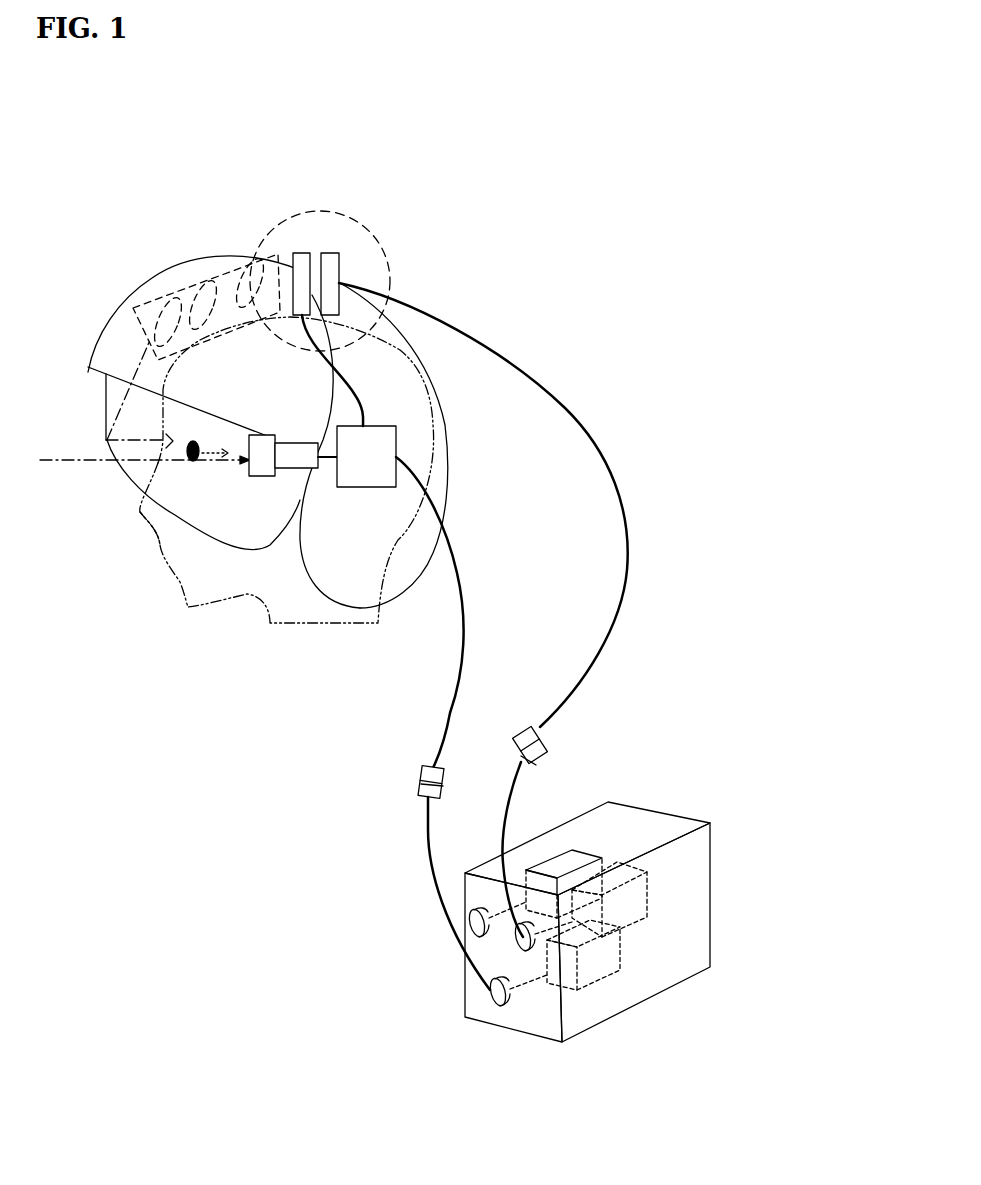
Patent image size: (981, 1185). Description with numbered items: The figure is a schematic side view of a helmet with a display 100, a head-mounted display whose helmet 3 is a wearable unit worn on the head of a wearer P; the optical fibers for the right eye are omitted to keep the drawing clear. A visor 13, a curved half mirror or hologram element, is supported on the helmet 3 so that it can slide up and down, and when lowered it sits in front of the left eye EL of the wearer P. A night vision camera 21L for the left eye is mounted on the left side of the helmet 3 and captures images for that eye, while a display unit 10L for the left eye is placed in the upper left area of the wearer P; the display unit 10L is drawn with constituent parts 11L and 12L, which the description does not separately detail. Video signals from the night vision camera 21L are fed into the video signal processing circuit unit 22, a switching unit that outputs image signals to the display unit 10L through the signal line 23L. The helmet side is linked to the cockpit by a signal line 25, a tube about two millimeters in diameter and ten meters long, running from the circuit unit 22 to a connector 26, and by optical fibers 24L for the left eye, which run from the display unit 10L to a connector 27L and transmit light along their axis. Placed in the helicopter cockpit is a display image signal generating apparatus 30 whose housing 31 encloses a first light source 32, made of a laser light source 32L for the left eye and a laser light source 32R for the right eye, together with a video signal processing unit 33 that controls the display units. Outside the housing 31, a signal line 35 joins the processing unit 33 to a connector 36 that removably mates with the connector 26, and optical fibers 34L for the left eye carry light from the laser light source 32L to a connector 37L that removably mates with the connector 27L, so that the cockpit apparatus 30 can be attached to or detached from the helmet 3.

The helmet with a display 100 is at (503, 128).
The display unit for the left eye 10L is at (327, 123).
The left lens optical system 11L is at (222, 297).
The left image display element 12L is at (323, 212).
The visor 13 is at (106, 418).
The left eye EL is at (205, 458).
The wearer P is at (203, 570).
The helmet 3 is at (333, 572).
The night vision camera for the left eye 21L is at (260, 468).
The video signal processing circuit unit 22 is at (380, 442).
The signal line 23L is at (358, 392).
The optical fibers for the left eye 24L is at (560, 403).
The signal line 25 is at (465, 647).
The connector 26 is at (420, 770).
The connector 36 is at (418, 787).
The connector for the left eye 27L is at (543, 733).
The connector for the left eye 37L is at (543, 753).
The optical fibers for the left eye 34L is at (507, 797).
The signal line 35 is at (430, 905).
The display image signal generating apparatus 30 is at (813, 784).
The housing 31 is at (647, 823).
The first light source 32 is at (767, 840).
The laser light source for the right eye 32R is at (587, 852).
The laser light source for the left eye 32L is at (633, 897).
The video signal processing unit 33 is at (607, 955).